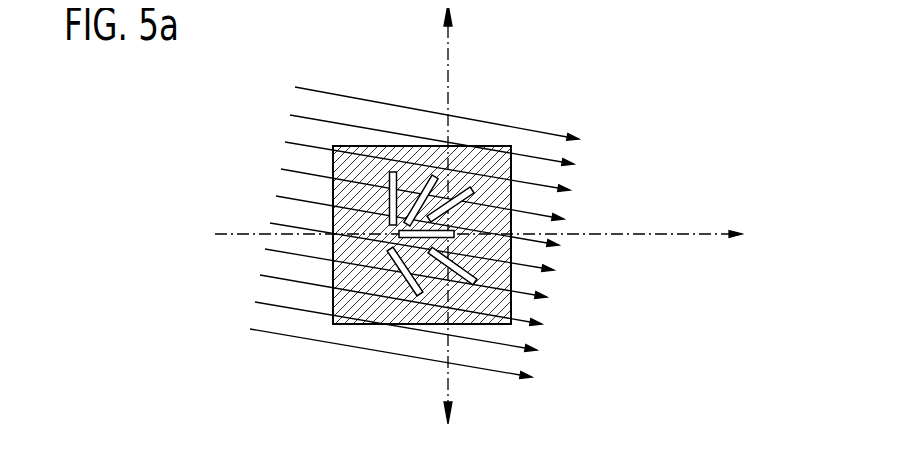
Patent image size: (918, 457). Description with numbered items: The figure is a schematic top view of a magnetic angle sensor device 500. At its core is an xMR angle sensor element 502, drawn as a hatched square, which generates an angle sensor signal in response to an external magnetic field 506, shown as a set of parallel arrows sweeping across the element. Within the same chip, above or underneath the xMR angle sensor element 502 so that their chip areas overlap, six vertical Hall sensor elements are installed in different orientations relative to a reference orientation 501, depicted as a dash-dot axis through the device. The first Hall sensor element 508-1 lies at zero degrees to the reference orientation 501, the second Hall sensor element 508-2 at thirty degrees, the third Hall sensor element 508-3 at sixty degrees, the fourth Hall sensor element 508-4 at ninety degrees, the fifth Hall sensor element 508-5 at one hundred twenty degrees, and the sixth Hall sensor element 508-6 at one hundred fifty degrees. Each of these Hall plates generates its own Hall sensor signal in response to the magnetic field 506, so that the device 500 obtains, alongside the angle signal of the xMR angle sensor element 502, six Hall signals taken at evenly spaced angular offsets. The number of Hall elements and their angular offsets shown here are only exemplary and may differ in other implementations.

The magnetic angle sensor device 500 is at (642, 90).
The reference orientation 501 is at (448, 50).
The xMR angle sensor element 502 is at (486, 146).
The external magnetic field 506 is at (278, 247).
The first Hall sensor element 508-1 is at (388, 177).
The second Hall sensor element 508-2 is at (429, 174).
The third Hall sensor element 508-3 is at (472, 189).
The fourth Hall sensor element 508-4 is at (386, 246).
The fifth Hall sensor element 508-5 is at (476, 277).
The sixth Hall sensor element 508-6 is at (418, 294).